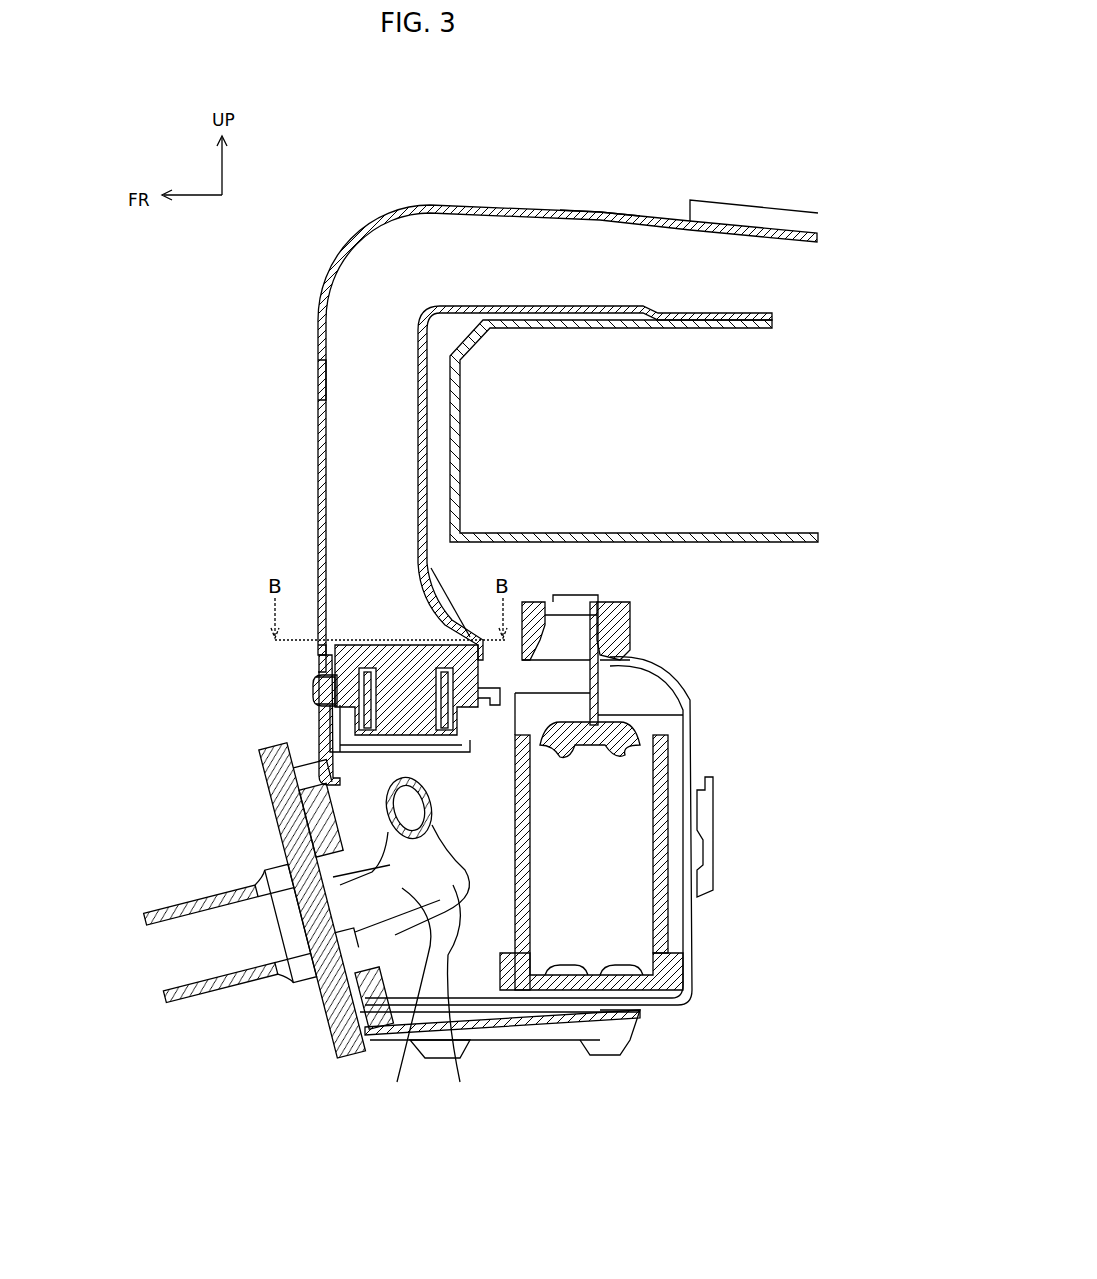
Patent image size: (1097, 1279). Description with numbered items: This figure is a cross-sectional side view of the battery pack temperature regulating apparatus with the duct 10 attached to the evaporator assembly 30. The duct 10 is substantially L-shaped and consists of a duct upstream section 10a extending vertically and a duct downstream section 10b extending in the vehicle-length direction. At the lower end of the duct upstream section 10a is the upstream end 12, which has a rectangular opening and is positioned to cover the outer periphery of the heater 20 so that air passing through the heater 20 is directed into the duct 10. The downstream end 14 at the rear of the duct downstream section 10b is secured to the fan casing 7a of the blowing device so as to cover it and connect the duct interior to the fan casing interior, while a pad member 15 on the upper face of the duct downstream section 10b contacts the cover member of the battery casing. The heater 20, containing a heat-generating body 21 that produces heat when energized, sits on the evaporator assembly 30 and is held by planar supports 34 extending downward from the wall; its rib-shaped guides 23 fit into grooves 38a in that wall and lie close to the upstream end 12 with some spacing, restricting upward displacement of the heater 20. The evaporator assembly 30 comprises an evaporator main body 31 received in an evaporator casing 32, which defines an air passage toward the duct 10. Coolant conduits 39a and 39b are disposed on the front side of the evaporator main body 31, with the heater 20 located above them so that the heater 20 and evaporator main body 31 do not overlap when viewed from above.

The fan casing 7a is at (775, 560).
The duct 10 is at (303, 281).
The duct upstream section 10a is at (316, 378).
The duct downstream section 10b is at (612, 207).
The upstream end 12 is at (299, 665).
The downstream end 14 is at (803, 304).
The pad member 15 is at (773, 191).
The heater 20 is at (275, 680).
The heat-generating body 21 is at (405, 660).
The guides 23 is at (316, 690).
The evaporator assembly 30 is at (236, 787).
The evaporator main body 31 is at (608, 864).
The evaporator casing 32 is at (753, 809).
The supports 34 is at (441, 772).
The grooves 38a is at (318, 705).
The conduit 39a is at (467, 999).
The conduit 39b is at (405, 1000).